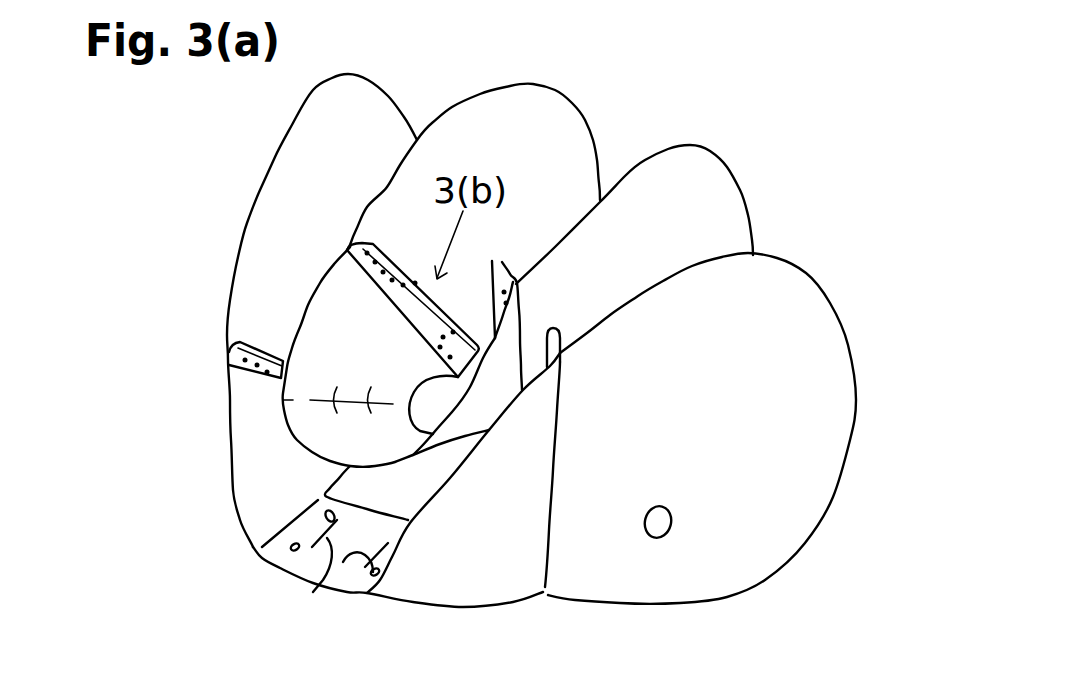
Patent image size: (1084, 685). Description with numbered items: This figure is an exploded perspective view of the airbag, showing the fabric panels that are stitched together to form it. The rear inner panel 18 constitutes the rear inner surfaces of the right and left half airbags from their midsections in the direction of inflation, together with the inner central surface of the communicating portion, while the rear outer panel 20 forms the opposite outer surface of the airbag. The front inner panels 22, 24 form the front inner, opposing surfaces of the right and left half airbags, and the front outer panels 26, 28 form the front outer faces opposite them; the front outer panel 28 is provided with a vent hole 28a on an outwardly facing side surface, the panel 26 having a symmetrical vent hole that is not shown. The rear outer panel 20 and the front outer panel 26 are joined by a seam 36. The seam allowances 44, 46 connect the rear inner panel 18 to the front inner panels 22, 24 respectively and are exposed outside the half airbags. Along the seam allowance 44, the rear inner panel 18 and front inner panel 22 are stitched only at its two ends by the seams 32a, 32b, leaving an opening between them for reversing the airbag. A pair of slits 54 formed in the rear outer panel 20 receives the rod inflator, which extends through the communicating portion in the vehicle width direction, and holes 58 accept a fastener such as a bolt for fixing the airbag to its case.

The rear inner panel 18 is at (281, 402).
The rear outer panel 20 is at (488, 588).
The front inner panel 22 is at (545, 109).
The front inner panel 24 is at (703, 170).
The front outer panel 26 is at (349, 100).
The front outer panel 28 is at (830, 452).
The vent hole 28a is at (672, 508).
The seam 32a is at (368, 261).
The seam 32b is at (438, 347).
The seam 36 is at (258, 363).
The seam allowance 44 is at (397, 243).
The seam allowance 46 is at (516, 278).
The slits 54 is at (322, 586).
The holes 58 is at (282, 546).